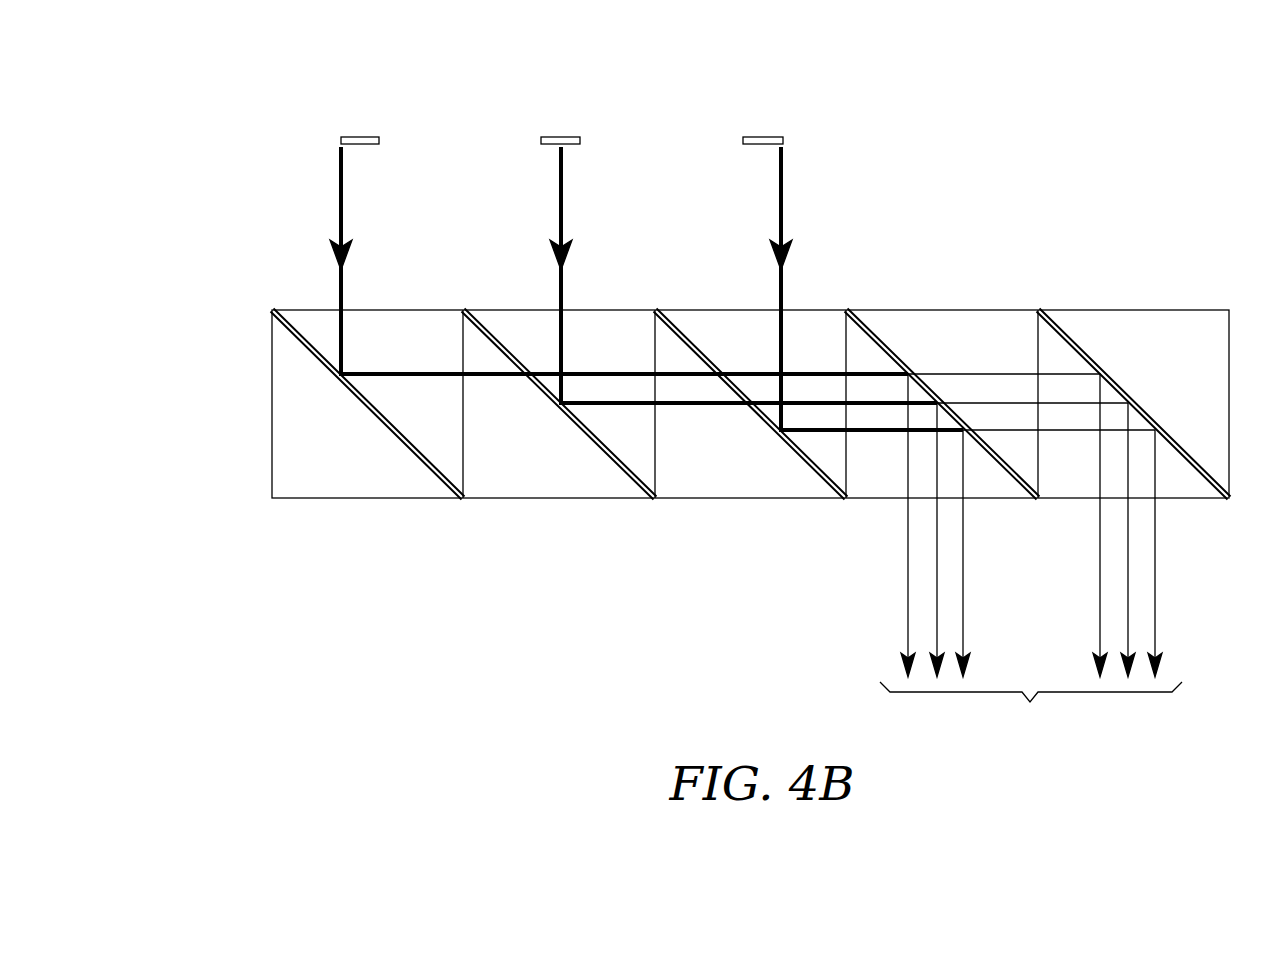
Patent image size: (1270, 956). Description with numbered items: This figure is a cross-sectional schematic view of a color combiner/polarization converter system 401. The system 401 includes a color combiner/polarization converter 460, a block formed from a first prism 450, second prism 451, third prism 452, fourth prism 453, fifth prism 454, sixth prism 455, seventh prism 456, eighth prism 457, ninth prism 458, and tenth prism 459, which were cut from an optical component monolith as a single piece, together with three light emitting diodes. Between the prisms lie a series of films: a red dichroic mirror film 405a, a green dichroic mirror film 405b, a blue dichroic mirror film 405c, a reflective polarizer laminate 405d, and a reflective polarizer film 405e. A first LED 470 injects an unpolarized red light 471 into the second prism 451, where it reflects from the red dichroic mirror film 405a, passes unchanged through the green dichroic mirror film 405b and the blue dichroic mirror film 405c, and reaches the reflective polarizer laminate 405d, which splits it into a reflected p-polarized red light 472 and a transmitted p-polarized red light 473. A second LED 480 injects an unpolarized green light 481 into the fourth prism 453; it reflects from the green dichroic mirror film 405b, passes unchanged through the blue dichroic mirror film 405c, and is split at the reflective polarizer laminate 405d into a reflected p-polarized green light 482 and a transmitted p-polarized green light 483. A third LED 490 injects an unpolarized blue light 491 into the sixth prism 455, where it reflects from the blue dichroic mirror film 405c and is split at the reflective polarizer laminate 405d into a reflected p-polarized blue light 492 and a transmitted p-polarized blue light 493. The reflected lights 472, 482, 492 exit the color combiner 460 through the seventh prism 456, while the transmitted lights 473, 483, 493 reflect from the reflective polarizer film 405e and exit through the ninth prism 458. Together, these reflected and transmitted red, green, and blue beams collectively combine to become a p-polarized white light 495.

The color combiner/polarization converter system 401 is at (235, 83).
The color combiner/polarization converter 460 is at (243, 382).
The first prism 450 is at (308, 478).
The second prism 451 is at (405, 325).
The third prism 452 is at (488, 478).
The fourth prism 453 is at (620, 325).
The fifth prism 454 is at (683, 478).
The sixth prism 455 is at (822, 325).
The seventh prism 456 is at (990, 478).
The eighth prism 457 is at (1015, 325).
The ninth prism 458 is at (1183, 478).
The tenth prism 459 is at (1205, 325).
The red dichroic mirror film 405a is at (415, 455).
The green dichroic mirror film 405b is at (608, 455).
The blue dichroic mirror film 405c is at (795, 450).
The reflective polarizer laminate 405d is at (900, 348).
The reflective polarizer film 405e is at (1088, 348).
The first LED 470 is at (364, 135).
The second LED 480 is at (562, 135).
The third LED 490 is at (757, 135).
The unpolarized red light 471 is at (345, 176).
The unpolarized green light 481 is at (565, 177).
The unpolarized blue light 491 is at (785, 177).
The reflected p-polarized red light 472 is at (908, 573).
The reflected p-polarized green light 482 is at (937, 608).
The reflected p-polarized blue light 492 is at (963, 623).
The transmitted p-polarized red light 473 is at (1100, 573).
The transmitted p-polarized green light 483 is at (1128, 568).
The transmitted p-polarized blue light 493 is at (1155, 622).
The p-polarized white light 495 is at (1031, 711).